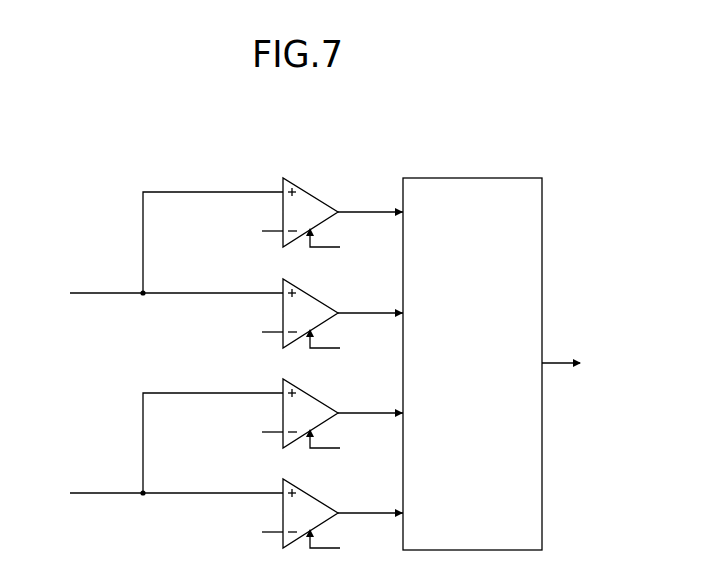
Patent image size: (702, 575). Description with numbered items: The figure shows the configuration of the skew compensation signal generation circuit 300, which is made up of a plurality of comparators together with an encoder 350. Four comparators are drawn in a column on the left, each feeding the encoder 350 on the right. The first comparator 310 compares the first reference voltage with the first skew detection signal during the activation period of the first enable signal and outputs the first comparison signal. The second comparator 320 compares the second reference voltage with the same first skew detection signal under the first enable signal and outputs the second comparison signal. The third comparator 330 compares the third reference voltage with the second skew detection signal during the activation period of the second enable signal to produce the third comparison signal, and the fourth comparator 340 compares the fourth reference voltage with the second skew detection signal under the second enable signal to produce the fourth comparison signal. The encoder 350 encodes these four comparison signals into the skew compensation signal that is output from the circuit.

The skew compensation signal generation circuit 300 is at (523, 118).
The first comparator 310 is at (309, 194).
The second comparator 320 is at (309, 295).
The third comparator 330 is at (309, 396).
The fourth comparator 340 is at (309, 496).
The encoder 350 is at (506, 178).